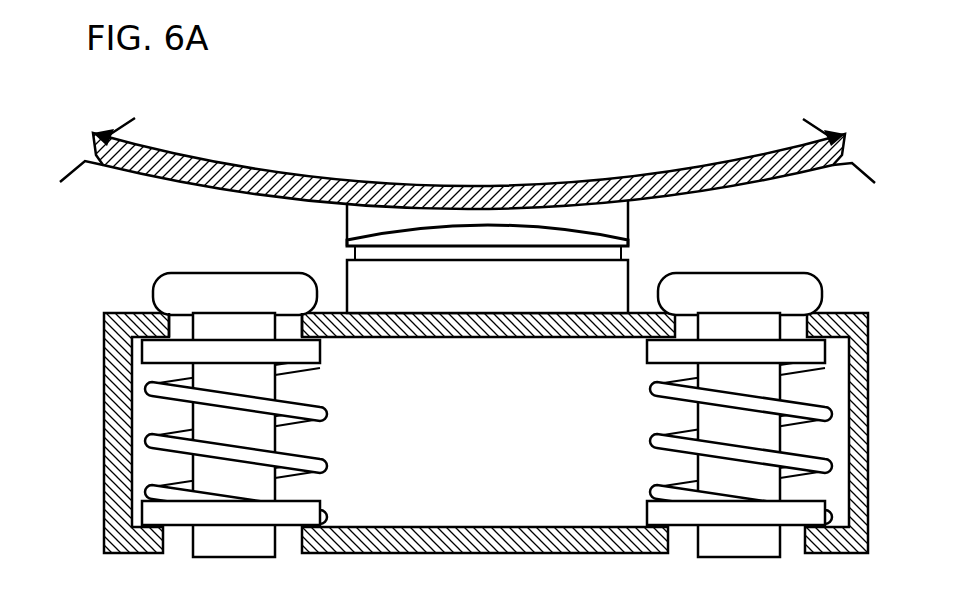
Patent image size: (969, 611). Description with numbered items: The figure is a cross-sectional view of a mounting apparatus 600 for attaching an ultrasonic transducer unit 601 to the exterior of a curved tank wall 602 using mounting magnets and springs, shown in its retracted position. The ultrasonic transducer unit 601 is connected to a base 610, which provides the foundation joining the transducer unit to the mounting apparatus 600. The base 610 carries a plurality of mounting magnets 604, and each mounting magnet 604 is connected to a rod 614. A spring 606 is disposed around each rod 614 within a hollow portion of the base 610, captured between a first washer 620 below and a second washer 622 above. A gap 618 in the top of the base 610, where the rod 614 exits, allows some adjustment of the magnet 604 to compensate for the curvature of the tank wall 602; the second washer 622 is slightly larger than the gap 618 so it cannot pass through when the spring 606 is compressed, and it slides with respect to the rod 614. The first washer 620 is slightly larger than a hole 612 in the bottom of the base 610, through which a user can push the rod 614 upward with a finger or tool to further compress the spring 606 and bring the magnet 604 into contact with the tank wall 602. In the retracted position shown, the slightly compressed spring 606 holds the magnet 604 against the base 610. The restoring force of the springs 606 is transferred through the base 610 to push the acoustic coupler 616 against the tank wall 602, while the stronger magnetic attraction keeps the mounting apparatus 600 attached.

The mounting apparatus 600 is at (86, 282).
The ultrasonic transducer unit 601 is at (507, 301).
The tank wall 602 is at (557, 188).
The mounting magnet 604 is at (235, 273).
The spring 606 is at (323, 460).
The base 610 is at (104, 430).
The hole 612 is at (175, 556).
The rod 614 is at (323, 387).
The acoustic coupler 616 is at (385, 222).
The gap 618 is at (183, 325).
The first washer 620 is at (323, 508).
The second washer 622 is at (322, 351).